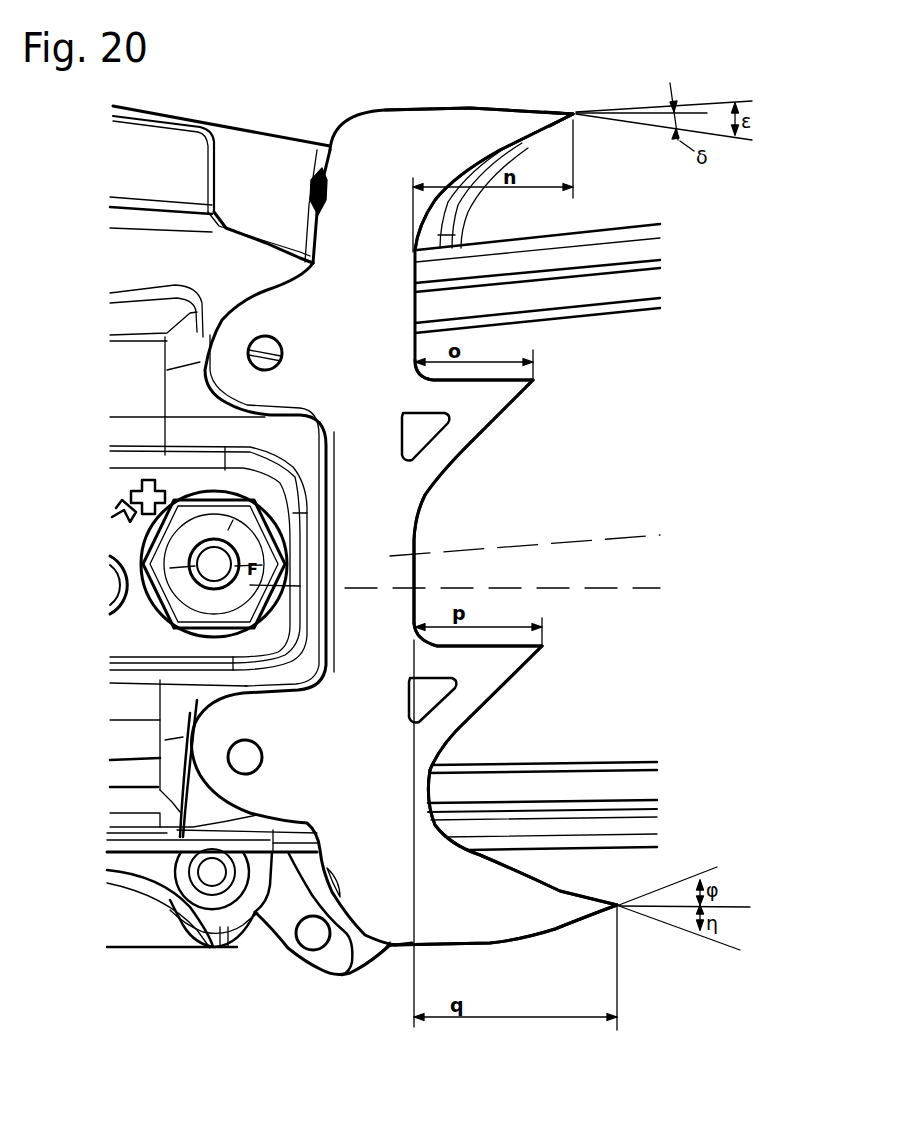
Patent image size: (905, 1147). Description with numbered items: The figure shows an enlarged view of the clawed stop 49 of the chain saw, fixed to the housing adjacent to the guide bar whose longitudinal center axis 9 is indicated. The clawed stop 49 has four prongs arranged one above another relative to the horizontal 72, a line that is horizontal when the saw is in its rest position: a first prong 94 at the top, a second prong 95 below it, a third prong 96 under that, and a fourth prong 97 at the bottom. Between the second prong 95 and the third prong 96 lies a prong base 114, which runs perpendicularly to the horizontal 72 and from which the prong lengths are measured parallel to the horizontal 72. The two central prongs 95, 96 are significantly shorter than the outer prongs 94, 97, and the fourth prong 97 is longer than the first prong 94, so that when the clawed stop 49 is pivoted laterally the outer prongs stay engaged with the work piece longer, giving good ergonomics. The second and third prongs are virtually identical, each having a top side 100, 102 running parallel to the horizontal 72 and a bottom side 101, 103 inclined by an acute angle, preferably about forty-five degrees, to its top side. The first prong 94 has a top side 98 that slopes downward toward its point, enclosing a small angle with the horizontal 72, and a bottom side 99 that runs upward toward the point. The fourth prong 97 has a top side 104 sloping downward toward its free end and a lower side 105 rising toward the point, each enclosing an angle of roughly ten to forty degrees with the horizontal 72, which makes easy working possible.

The longitudinal center axis 9 is at (597, 540).
The clawed stop 49 is at (337, 118).
The horizontal 72 is at (645, 112).
The first prong 94 is at (477, 117).
The second prong 95 is at (487, 410).
The third prong 96 is at (485, 665).
The fourth prong 97 is at (520, 918).
The top side 98 is at (548, 112).
The bottom side 99 is at (543, 128).
The top side 100 is at (497, 382).
The bottom side 101 is at (470, 447).
The top side 102 is at (495, 645).
The bottom side 103 is at (492, 700).
The top side 104 is at (578, 890).
The lower side 105 is at (575, 920).
The prong base 114 is at (415, 543).